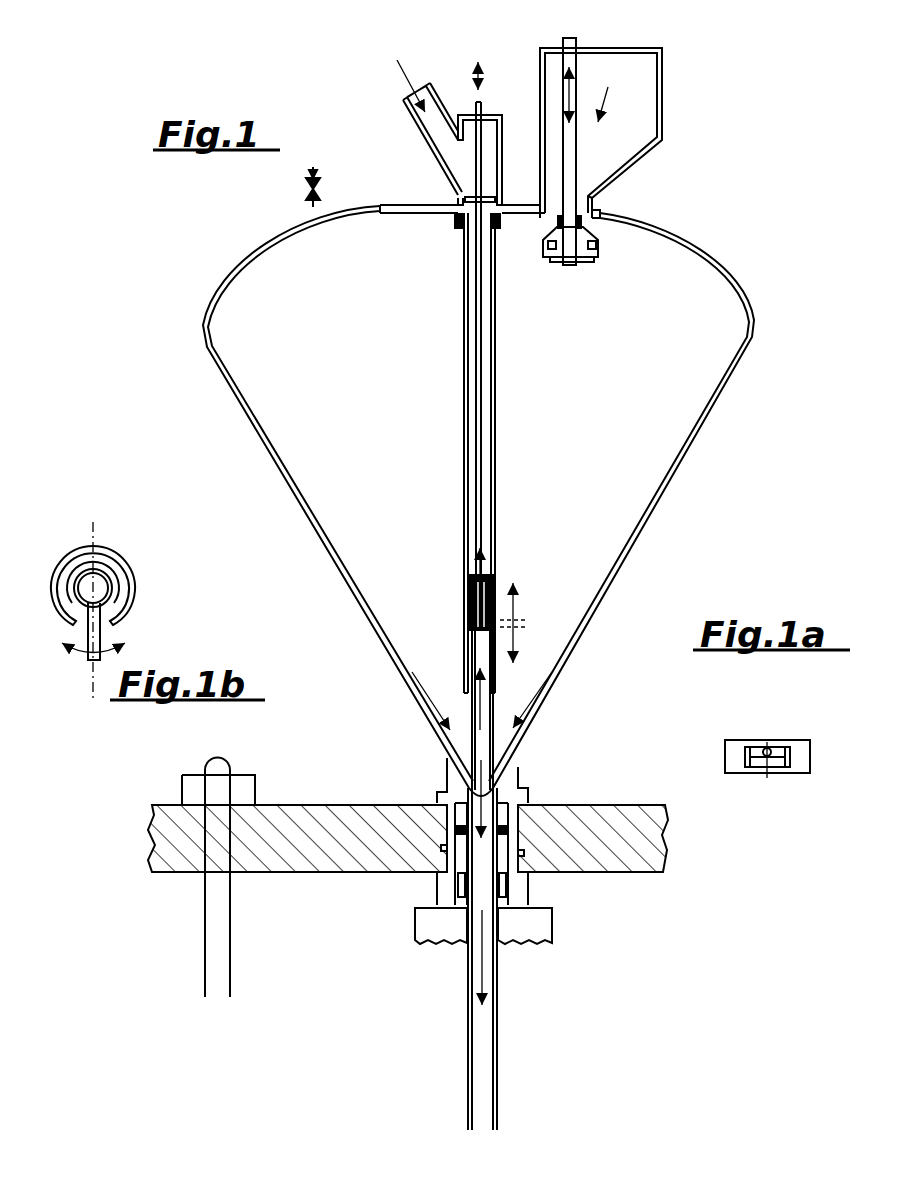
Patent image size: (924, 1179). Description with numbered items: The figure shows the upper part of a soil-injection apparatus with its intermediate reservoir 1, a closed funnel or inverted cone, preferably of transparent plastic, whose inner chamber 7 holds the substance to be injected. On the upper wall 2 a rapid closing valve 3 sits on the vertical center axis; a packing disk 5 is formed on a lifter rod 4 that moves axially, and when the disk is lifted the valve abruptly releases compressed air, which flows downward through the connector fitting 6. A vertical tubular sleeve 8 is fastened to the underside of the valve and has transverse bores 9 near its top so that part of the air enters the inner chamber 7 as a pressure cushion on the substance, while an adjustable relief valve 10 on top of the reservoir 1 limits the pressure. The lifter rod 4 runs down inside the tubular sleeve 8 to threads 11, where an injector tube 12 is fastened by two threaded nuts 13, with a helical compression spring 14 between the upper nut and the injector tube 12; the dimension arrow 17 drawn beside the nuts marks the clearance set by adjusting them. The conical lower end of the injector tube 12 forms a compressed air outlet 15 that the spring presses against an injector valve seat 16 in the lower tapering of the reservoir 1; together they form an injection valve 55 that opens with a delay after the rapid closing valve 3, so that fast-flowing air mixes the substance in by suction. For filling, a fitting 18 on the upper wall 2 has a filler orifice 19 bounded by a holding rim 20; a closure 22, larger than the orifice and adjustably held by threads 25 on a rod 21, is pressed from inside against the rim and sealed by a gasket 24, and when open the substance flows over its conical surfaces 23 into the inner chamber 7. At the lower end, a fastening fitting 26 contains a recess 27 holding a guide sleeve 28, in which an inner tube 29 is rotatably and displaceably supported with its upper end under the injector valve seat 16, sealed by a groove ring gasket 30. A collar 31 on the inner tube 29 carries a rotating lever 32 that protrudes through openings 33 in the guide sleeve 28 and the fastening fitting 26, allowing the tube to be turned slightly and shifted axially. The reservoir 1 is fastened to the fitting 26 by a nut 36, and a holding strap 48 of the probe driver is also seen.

In FIG. 1, the intermediate reservoir 1 is at (700, 425).
In FIG. 1, the upper wall 2 is at (396, 206).
In FIG. 1, the rapid closing valve 3 is at (500, 115).
In FIG. 1, the lifter rod 4 is at (468, 305).
In FIG. 1, the packing disk 5 is at (487, 200).
In FIG. 1, the connector fitting 6 is at (412, 128).
In FIG. 1, the inner chamber 7 is at (588, 430).
In FIG. 1, the tubular sleeve 8 is at (496, 370).
In FIG. 1, the transverse bores 9 is at (458, 224).
In FIG. 1, the relief valve 10 is at (320, 195).
In FIG. 1, the threads 11 is at (484, 553).
In FIG. 1, the injector tube 12 is at (472, 720).
In FIG. 1, the threaded nuts 13 is at (470, 578).
In FIG. 1, the helical compression spring 14 is at (470, 600).
In FIG. 1, the compressed air outlet 15 is at (500, 785).
In FIG. 1, the injector valve seat 16 is at (510, 775).
In FIG. 1, the stroke 17 is at (518, 623).
In FIG. 1, the fitting 18 is at (663, 105).
In FIG. 1, the filler orifice 19 is at (590, 205).
In FIG. 1, the holding rim 20 is at (598, 218).
In FIG. 1, the rod 21 is at (578, 56).
In FIG. 1, the closure 22 is at (590, 258).
In FIG. 1, the conical surfaces 23 is at (557, 220).
In FIG. 1, the gasket 24 is at (598, 245).
In FIG. 1, the threads 25 is at (565, 263).
In FIG. 1, the fastening fitting 26 is at (440, 795).
In FIG. 1b, the fastening fitting 26 is at (72, 552).
In FIG. 1a, the fastening fitting 26 is at (812, 752).
In FIG. 1, the recess 27 is at (509, 852).
In FIG. 1, the guide sleeve 28 is at (445, 848).
In FIG. 1b, the guide sleeve 28 is at (72, 575).
In FIG. 1, the inner tube 29 is at (498, 998).
In FIG. 1b, the inner tube 29 is at (80, 588).
In FIG. 1, the groove ring gasket 30 is at (455, 830).
In FIG. 1, the collar 31 is at (458, 885).
In FIG. 1b, the collar 31 is at (68, 602).
In FIG. 1a, the collar 31 is at (757, 748).
In FIG. 1b, the rotating lever 32 is at (88, 660).
In FIG. 1a, the rotating lever 32 is at (775, 748).
In FIG. 1b, the openings 33 is at (78, 628).
In FIG. 1a, the openings 33 is at (780, 770).
In FIG. 1, the nut 36 is at (415, 930).
In FIG. 1, the holding strap 48 is at (306, 805).
In FIG. 1, the injection valve 55 is at (527, 777).